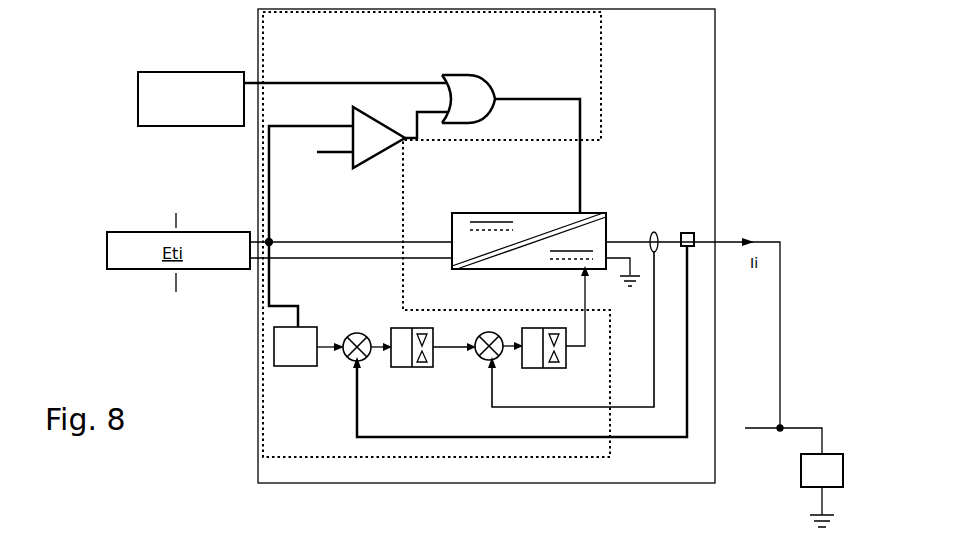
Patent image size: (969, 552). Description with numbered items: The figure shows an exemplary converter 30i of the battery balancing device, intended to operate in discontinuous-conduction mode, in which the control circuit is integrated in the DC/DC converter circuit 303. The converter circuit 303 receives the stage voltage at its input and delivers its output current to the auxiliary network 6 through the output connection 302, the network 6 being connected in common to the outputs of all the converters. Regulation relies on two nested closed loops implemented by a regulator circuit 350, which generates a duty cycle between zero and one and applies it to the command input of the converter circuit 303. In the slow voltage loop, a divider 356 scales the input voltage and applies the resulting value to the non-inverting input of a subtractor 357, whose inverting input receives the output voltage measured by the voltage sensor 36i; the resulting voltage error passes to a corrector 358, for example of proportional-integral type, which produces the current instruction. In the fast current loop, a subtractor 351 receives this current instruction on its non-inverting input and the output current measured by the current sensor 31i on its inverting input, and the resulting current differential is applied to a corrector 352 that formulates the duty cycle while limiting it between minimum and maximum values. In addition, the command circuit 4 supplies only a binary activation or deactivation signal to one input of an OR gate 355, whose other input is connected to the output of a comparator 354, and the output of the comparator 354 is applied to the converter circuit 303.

The command circuit 4 is at (292, 99).
The auxiliary network 6 is at (822, 490).
The converter 30i is at (486, 246).
The current sensor 31i is at (654, 232).
The voltage sensor 36i is at (688, 233).
The output bus 302 is at (781, 427).
The DC/DC converter circuit 303 is at (528, 213).
The regulator circuit 350 is at (262, 461).
The subtractor 351 is at (488, 332).
The corrector 352 is at (541, 328).
The comparator 354 is at (378, 107).
The OR gate 355 is at (470, 75).
The voltage reference computing block 356 is at (296, 367).
The subtractor 357 is at (355, 333).
The corrector 358 is at (416, 328).